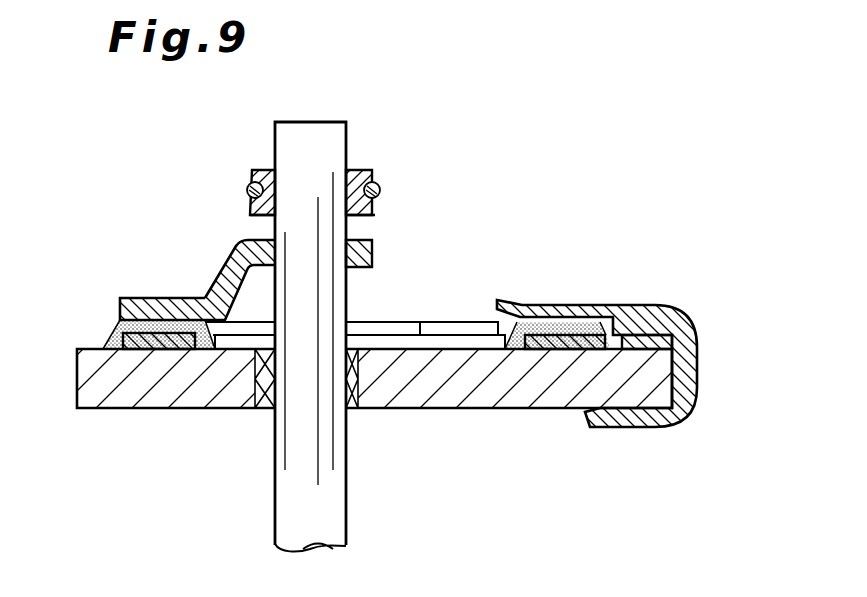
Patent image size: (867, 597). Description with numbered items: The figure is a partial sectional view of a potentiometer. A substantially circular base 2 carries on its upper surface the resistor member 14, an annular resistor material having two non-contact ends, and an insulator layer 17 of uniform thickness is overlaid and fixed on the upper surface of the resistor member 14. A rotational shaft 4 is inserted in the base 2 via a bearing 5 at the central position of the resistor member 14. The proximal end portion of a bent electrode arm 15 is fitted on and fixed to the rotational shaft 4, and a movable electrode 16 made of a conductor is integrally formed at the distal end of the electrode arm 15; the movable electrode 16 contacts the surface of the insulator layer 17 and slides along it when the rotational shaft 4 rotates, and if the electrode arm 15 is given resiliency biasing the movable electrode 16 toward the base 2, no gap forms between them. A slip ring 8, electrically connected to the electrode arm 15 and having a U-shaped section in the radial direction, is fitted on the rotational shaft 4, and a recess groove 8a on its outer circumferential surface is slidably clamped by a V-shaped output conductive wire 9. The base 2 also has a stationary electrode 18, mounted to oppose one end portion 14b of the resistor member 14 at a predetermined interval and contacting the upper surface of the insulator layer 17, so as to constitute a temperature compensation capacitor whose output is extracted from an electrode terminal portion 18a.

The base 2 is at (460, 410).
The rotational shaft 4 is at (345, 500).
The bearing 5 is at (366, 383).
The slip ring 8 is at (350, 172).
The recess groove 8a is at (378, 215).
The output conductive wire 9 is at (382, 191).
The resistor member 14 is at (152, 352).
The end portion of the resistor member 14b is at (555, 356).
The electrode arm 15 is at (230, 285).
The movable electrode 16 is at (140, 297).
The insulator layer 17 is at (173, 320).
The stationary electrode 18 is at (583, 305).
The electrode terminal portion 18a is at (675, 345).